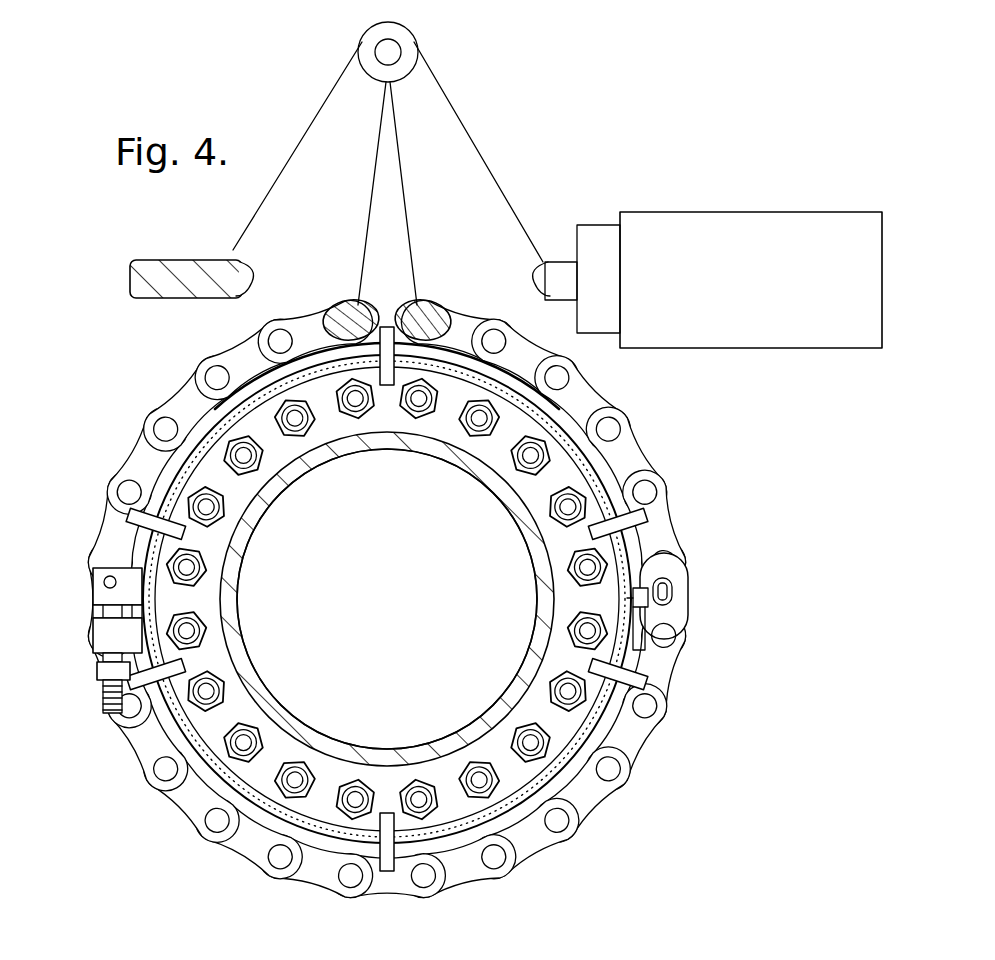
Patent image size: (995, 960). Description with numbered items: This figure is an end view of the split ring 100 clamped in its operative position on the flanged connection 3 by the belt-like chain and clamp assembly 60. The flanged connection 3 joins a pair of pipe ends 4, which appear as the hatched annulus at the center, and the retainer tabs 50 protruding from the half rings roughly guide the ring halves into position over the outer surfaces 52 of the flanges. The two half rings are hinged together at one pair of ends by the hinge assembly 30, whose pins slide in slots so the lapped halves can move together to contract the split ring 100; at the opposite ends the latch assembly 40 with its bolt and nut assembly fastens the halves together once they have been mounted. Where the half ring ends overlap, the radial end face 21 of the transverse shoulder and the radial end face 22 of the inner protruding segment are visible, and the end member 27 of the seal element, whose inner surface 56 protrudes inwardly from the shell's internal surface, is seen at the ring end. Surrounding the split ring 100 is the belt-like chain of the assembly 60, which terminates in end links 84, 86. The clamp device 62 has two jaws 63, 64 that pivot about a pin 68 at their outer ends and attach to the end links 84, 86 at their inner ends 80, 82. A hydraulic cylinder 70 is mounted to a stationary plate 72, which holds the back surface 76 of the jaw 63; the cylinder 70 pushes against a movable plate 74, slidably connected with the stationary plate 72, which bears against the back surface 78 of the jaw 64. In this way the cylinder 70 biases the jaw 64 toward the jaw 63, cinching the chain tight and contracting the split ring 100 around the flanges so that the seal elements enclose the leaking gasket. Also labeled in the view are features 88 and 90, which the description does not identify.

The flanged connection 3 is at (247, 492).
The pipe ends 4 is at (250, 683).
The radial end face 21 is at (666, 640).
The radial end face 22 is at (662, 577).
The end member 27 is at (670, 591).
The hinge assembly 30 is at (652, 614).
The latch assembly 40 is at (75, 572).
The retainer tab 50 is at (652, 535).
The outer surfaces of the flanges 52 is at (240, 787).
The inner surface 56 is at (322, 812).
The belt-like chain and clamp assembly 60 is at (608, 805).
The clamp device 62 is at (578, 180).
The jaw 63 is at (300, 165).
The jaw 64 is at (476, 143).
The pin 68 is at (404, 38).
The hydraulic cylinder 70 is at (745, 235).
The stationary plate 72 is at (190, 268).
The movable plate 74 is at (562, 262).
The back surface 76 is at (232, 270).
The back surface 78 is at (543, 270).
The inner end of jaw 80 is at (363, 303).
The inner end of jaw 82 is at (412, 303).
The end link 84 is at (340, 320).
The end link 86 is at (450, 322).
The seal band 88 is at (215, 425).
The upper locating pin 90 is at (388, 327).
The split ring 100 is at (578, 410).